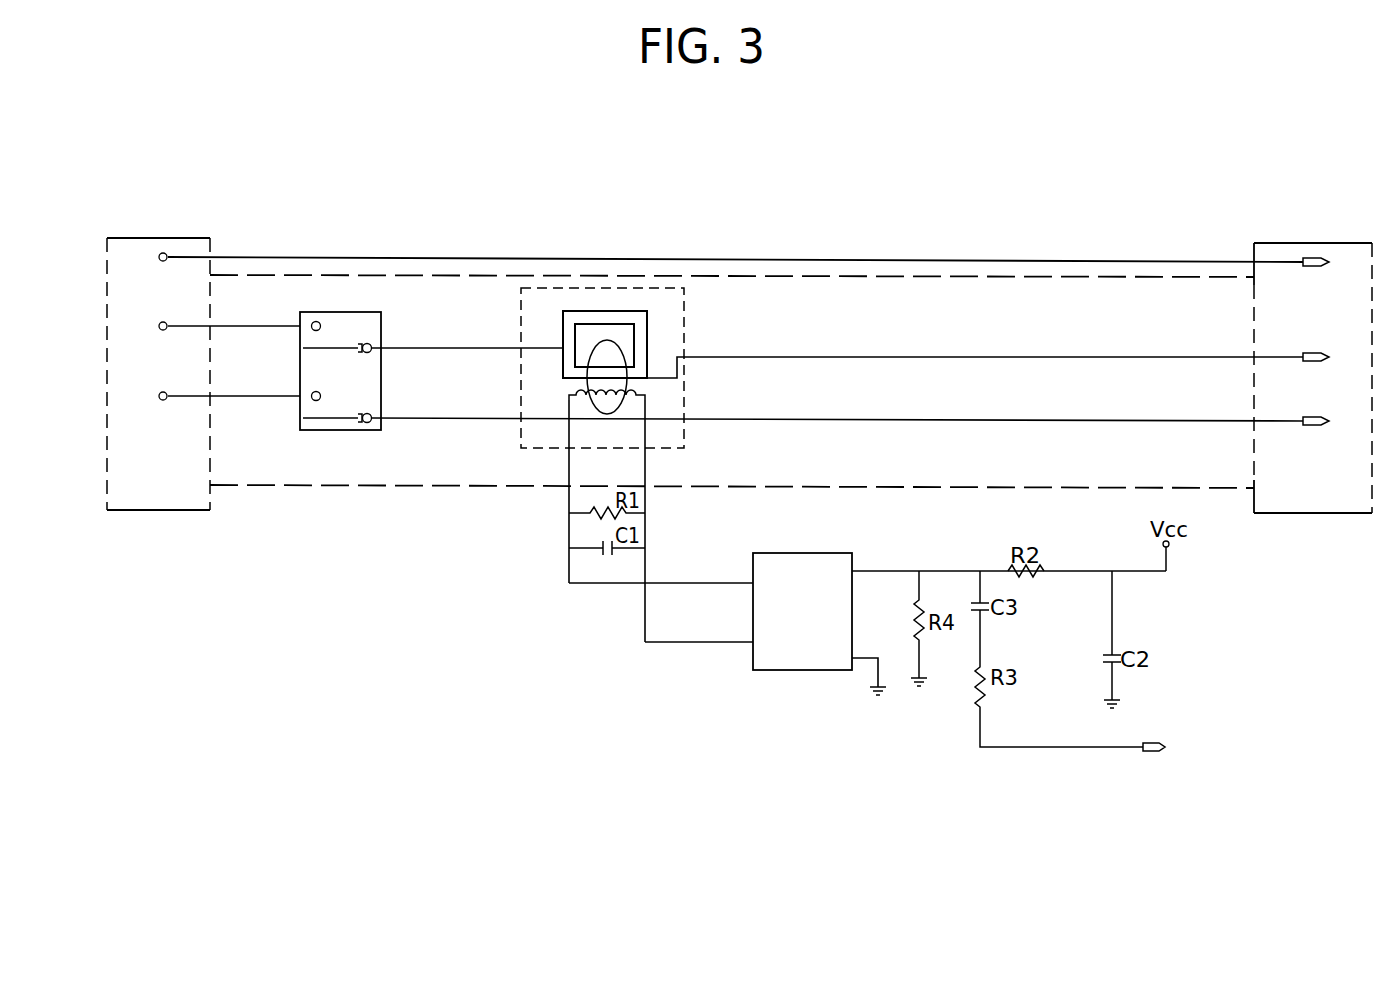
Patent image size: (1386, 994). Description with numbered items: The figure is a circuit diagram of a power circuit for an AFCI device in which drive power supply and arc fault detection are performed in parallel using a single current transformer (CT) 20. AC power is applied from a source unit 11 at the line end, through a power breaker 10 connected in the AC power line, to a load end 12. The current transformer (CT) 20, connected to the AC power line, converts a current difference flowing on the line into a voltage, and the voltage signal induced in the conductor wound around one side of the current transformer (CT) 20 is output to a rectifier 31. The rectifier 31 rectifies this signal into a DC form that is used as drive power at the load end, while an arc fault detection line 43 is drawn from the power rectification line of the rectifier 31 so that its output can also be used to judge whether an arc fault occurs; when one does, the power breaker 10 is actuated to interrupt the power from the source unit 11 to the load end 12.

The power breaker 10 is at (341, 312).
The source unit 11 is at (158, 511).
The load end 12 is at (1300, 513).
The current transformer (CT) 20 is at (603, 288).
The rectifier 31 is at (800, 553).
The arc fault detection line 43 is at (1060, 747).